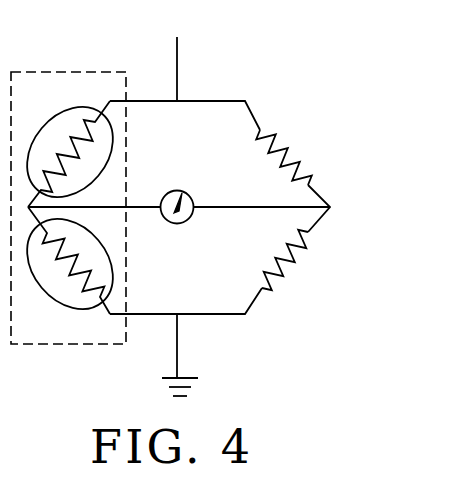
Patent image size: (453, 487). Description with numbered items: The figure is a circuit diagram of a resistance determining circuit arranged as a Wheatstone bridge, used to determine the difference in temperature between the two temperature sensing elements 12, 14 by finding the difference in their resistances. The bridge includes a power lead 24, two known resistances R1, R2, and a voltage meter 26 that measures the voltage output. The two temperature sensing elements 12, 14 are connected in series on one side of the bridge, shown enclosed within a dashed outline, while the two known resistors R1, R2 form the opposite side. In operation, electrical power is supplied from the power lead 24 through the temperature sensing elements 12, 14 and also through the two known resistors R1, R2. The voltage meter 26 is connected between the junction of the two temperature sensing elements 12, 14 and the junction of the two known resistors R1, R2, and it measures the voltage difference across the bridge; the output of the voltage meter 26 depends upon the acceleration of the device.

The temperature sensing element 12 is at (65, 298).
The temperature sensing element 14 is at (63, 123).
The power lead 24 is at (177, 73).
The voltage meter 26 is at (188, 214).
The known resistance R1 is at (289, 148).
The known resistance R2 is at (292, 271).